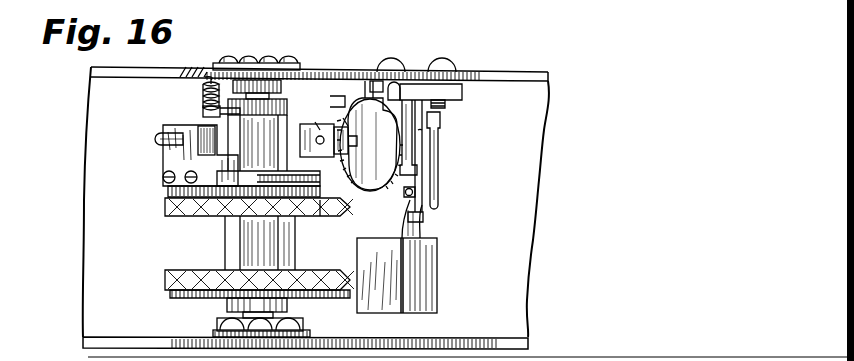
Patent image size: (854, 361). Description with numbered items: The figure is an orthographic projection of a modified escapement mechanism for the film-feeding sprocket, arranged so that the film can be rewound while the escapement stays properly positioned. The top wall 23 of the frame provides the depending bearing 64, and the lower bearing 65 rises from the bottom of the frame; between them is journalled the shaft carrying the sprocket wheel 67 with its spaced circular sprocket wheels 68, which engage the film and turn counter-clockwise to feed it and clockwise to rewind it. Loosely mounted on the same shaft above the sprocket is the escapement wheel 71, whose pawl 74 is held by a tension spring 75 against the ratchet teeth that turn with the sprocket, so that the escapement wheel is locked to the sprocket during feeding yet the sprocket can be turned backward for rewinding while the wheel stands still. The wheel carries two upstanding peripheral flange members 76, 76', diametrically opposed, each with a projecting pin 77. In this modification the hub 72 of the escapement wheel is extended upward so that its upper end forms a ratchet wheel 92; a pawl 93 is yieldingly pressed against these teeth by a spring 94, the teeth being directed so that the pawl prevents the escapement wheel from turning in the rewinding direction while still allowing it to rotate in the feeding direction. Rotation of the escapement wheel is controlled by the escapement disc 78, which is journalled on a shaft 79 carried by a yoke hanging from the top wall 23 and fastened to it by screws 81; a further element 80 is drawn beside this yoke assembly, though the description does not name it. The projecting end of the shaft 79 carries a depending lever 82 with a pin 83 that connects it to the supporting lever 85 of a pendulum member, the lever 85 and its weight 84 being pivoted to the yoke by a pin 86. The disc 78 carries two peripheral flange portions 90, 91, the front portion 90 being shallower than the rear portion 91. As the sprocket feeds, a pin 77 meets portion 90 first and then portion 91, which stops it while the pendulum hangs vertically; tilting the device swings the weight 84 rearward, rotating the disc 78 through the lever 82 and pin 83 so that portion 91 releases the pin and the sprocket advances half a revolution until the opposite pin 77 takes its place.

The top wall 23 is at (493, 72).
The spring 94 is at (203, 90).
The pawl 93 is at (204, 111).
The depending bearing 64 is at (297, 85).
The ratchet wheel 92 is at (289, 106).
The hub 72 is at (276, 134).
The upstanding peripheral flange member 76 is at (291, 156).
The upstanding peripheral flange member 76' is at (174, 153).
The pin 77 is at (158, 141).
The escapement wheel 71 is at (220, 179).
The tension spring 75 is at (288, 183).
The pawl 74 is at (323, 200).
The spaced circular sprocket wheels 68 is at (170, 292).
The sprocket wheel 67 is at (246, 261).
The escapement disc 78 is at (372, 178).
The peripheral flange portion 90 is at (345, 122).
The peripheral flange portion 91 is at (318, 126).
The screws 81 is at (404, 66).
The pin 86 is at (444, 72).
The vertical plate 80 is at (432, 108).
The shaft 79 is at (415, 135).
The depending lever 82 is at (438, 186).
The pin 83 is at (413, 193).
The supporting lever 85 is at (420, 228).
The weight 84 is at (433, 272).
The lower bearing 65 is at (462, 341).